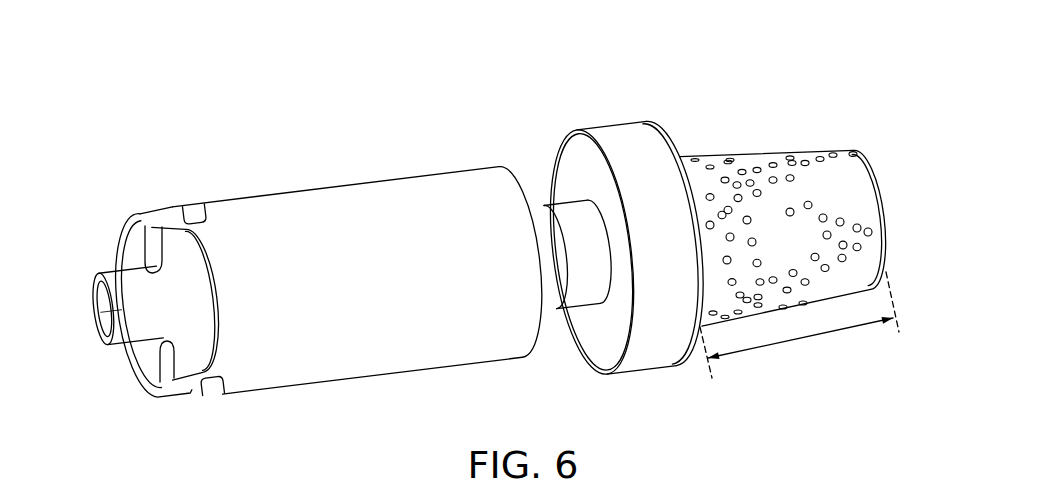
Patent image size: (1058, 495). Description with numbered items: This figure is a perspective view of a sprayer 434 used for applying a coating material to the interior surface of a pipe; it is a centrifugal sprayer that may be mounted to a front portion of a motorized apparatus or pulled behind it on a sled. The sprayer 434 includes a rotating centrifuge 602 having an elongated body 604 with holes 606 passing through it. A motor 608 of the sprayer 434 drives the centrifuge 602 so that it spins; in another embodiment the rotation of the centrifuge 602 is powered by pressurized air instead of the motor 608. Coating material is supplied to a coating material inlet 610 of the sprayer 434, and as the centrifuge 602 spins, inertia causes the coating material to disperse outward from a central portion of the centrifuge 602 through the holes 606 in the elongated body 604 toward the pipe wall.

The sprayer 434 is at (604, 79).
The rotating centrifuge 602 is at (818, 215).
The elongated body 604 is at (812, 340).
The holes 606 is at (882, 233).
The motor 608 is at (252, 200).
The coating material inlet 610 is at (92, 269).